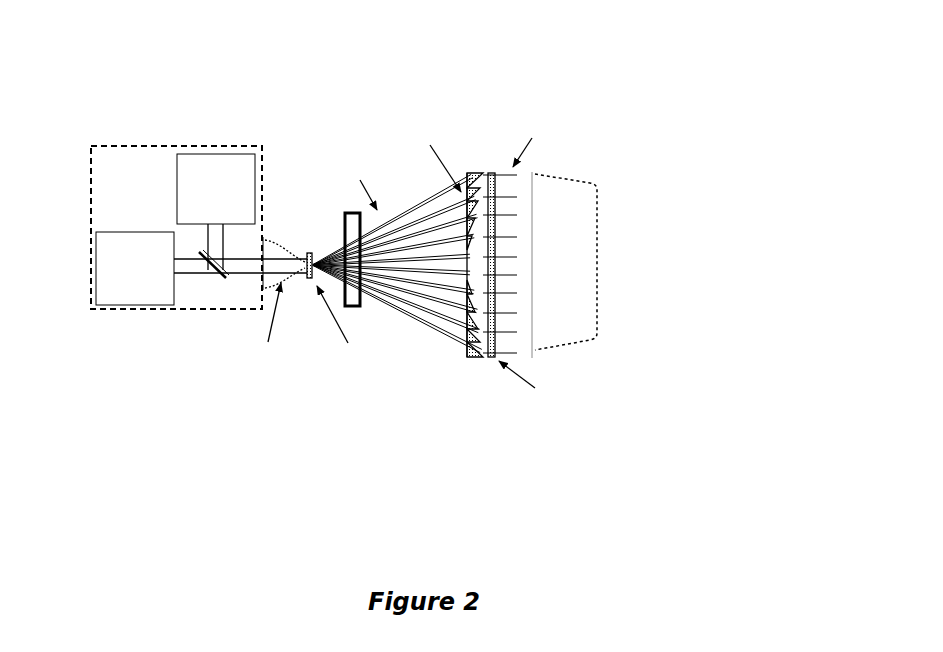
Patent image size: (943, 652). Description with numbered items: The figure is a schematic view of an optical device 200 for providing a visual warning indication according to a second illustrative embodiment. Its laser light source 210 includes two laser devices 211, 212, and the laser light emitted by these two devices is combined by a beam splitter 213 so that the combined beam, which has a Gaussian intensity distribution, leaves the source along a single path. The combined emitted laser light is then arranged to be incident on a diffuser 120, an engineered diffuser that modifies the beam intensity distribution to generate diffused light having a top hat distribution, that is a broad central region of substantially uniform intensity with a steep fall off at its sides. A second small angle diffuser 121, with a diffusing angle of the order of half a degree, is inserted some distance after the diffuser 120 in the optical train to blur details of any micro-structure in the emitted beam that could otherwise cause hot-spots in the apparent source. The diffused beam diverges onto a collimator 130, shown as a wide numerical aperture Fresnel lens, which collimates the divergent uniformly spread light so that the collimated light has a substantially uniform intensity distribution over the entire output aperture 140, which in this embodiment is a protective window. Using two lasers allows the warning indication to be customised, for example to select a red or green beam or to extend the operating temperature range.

The optical device 200 is at (121, 106).
The laser light source 210 is at (78, 197).
The laser device 211 is at (118, 306).
The laser device 212 is at (211, 154).
The beam splitter 213 is at (207, 277).
The diffuser 120 is at (310, 253).
The second small angle diffuser 121 is at (350, 307).
The collimator 130 is at (475, 354).
The output aperture 140 is at (492, 175).